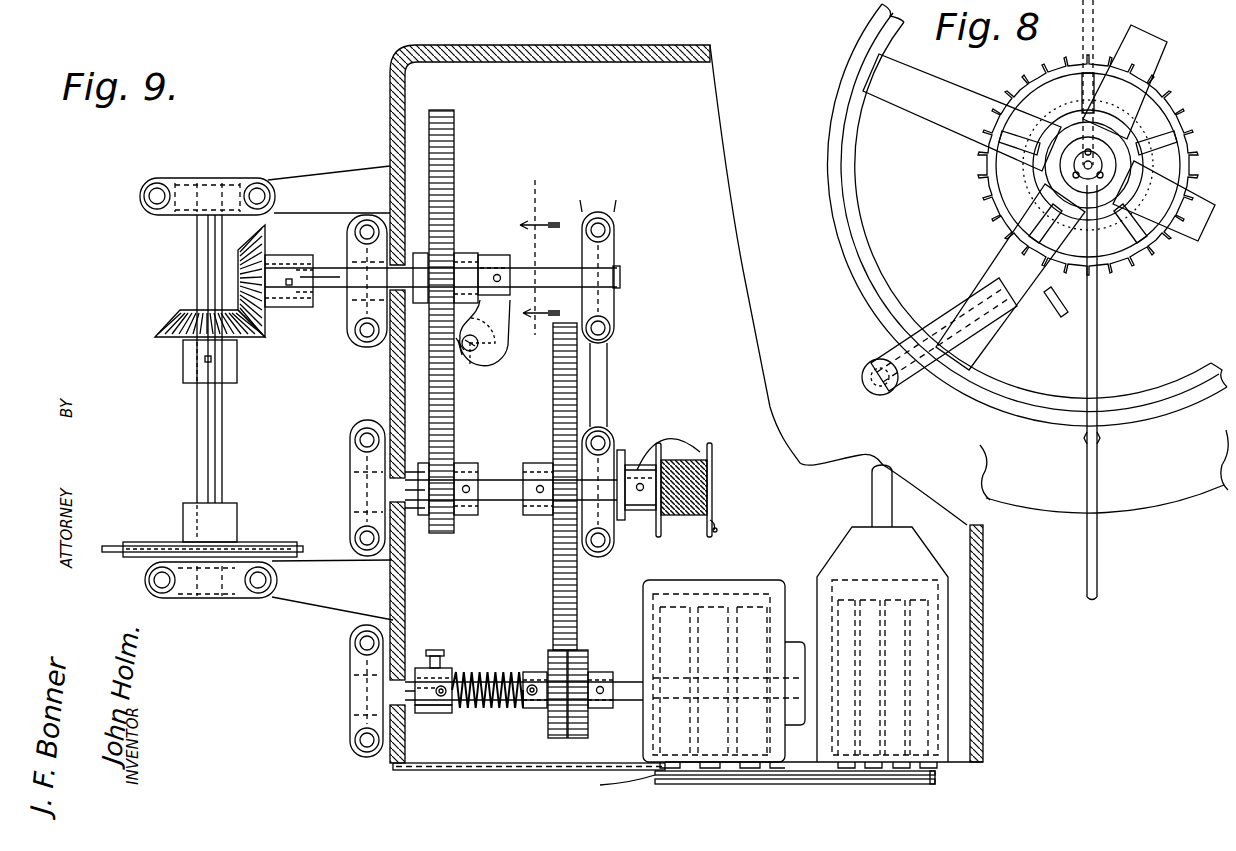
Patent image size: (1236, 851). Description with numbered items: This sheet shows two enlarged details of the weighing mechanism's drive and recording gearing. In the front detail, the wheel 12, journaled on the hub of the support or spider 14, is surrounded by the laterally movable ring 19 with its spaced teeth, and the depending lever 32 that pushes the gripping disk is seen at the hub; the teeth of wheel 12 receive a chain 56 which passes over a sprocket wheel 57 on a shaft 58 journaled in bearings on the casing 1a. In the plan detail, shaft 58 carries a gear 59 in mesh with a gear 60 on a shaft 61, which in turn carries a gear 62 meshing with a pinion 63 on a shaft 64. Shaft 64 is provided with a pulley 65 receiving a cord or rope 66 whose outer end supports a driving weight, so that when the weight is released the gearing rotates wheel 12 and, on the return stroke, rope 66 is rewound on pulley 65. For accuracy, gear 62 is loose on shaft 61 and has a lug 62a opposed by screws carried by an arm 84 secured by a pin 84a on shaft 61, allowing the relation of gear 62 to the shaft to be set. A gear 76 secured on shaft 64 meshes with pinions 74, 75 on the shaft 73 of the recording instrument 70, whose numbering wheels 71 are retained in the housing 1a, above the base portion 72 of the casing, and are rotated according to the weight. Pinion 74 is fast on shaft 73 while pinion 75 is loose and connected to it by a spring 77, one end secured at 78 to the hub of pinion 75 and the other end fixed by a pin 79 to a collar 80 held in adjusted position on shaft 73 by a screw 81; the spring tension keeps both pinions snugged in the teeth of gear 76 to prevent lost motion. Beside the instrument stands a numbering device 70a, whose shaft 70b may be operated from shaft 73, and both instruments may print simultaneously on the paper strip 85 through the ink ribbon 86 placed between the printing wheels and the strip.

In FIG. 9, the casing 1a is at (390, 150).
In FIG. 8, the wheel 12 is at (1000, 203).
In FIG. 8, the spider 14 is at (950, 286).
In FIG. 8, the laterally movable ring 19 is at (1192, 355).
In FIG. 8, the lever 32 is at (1110, 556).
In FIG. 9, the chain 56 is at (111, 538).
In FIG. 8, the chain 56 is at (1061, 316).
In FIG. 9, the sprocket wheel 57 is at (160, 543).
In FIG. 9, the shaft 58 is at (226, 462).
In FIG. 9, the gear 59 is at (238, 345).
In FIG. 9, the gear 60 is at (268, 322).
In FIG. 9, the shaft 61 is at (340, 298).
In FIG. 9, the gear 62 is at (456, 200).
In FIG. 9, the lug 62a is at (458, 348).
In FIG. 9, the pinion 63 is at (457, 458).
In FIG. 9, the shaft 64 is at (512, 500).
In FIG. 9, the pulley 65 is at (712, 505).
In FIG. 9, the cord or rope 66 is at (693, 516).
In FIG. 9, the recording instrument 70 is at (738, 583).
In FIG. 9, the numbering device 70a is at (858, 540).
In FIG. 9, the shaft of numbering device 70b is at (888, 476).
In FIG. 9, the numbering wheels 71 is at (626, 784).
In FIG. 9, the bottom plate 72 is at (497, 764).
In FIG. 9, the shaft 73 is at (627, 680).
In FIG. 9, the pinion 74 is at (592, 740).
In FIG. 9, the pinion 75 is at (557, 738).
In FIG. 9, the gear 76 is at (547, 609).
In FIG. 9, the spring 77 is at (495, 676).
In FIG. 9, the spring attachment point 78 is at (532, 684).
In FIG. 9, the pin 79 is at (437, 714).
In FIG. 9, the collar 80 is at (450, 668).
In FIG. 9, the screw 81 is at (432, 650).
In FIG. 9, the arm 84 is at (502, 338).
In FIG. 9, the pin 84a is at (500, 268).
In FIG. 9, the strip of paper 85 is at (806, 782).
In FIG. 9, the ink ribbon 86 is at (944, 783).